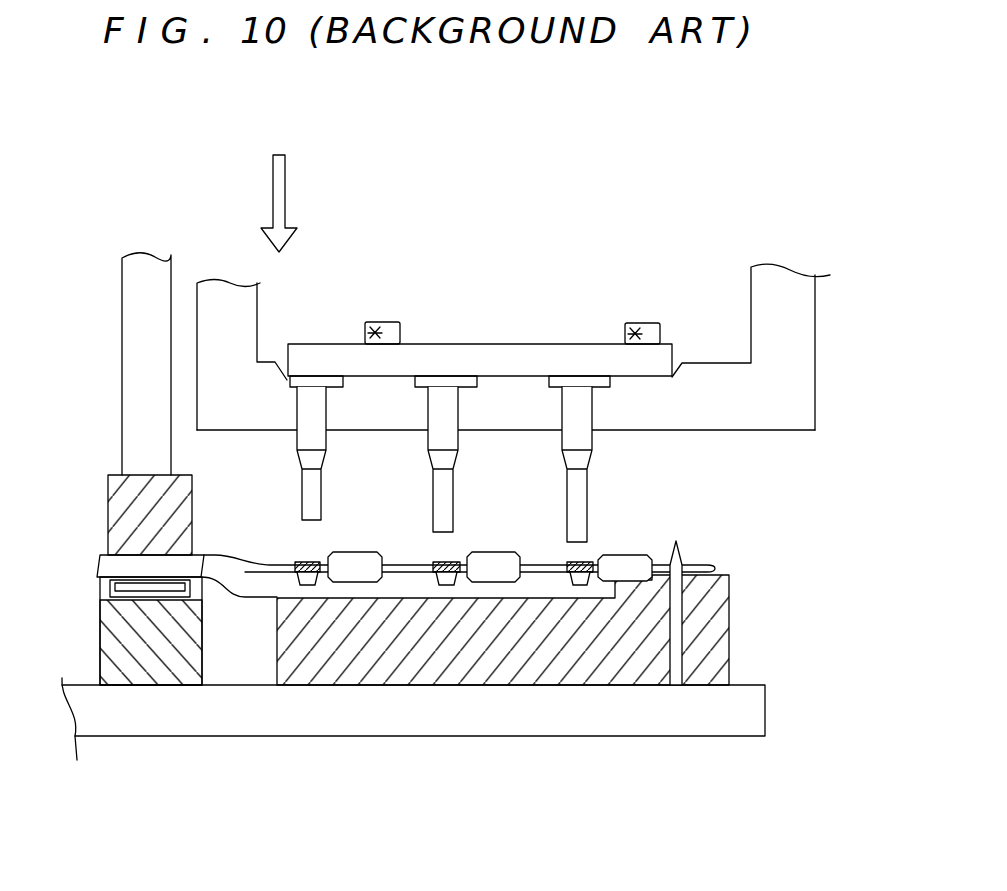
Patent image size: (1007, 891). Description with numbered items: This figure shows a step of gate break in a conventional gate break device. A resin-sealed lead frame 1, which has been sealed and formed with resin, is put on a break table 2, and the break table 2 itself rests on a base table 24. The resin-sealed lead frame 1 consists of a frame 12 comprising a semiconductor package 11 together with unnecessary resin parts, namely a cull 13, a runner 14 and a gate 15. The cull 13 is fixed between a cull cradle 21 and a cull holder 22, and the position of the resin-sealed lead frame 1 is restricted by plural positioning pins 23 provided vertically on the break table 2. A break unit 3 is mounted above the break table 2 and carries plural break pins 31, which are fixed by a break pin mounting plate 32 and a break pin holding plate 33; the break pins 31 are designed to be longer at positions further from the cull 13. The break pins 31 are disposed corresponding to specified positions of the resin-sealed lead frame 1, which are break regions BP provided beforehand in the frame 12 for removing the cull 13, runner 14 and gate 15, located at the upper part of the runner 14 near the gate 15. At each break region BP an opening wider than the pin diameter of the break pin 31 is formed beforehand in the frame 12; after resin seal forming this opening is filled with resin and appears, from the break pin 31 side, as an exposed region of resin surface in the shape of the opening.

The resin-sealed lead frame 1 is at (240, 608).
The break table 2 is at (710, 613).
The break unit 3 is at (697, 303).
The semiconductor package 11 is at (623, 556).
The frame 12 is at (715, 566).
The cull 13 is at (110, 565).
The runner 14 is at (233, 572).
The gate 15 is at (310, 585).
The cull cradle 21 is at (140, 665).
The cull holder 22 is at (120, 520).
The positioning pin 23 is at (683, 553).
The base table 24 is at (740, 710).
The break pin 31 is at (583, 492).
The break pin mounting plate 32 is at (795, 397).
The break pin holding plate 33 is at (488, 357).
The break region BP is at (300, 563).